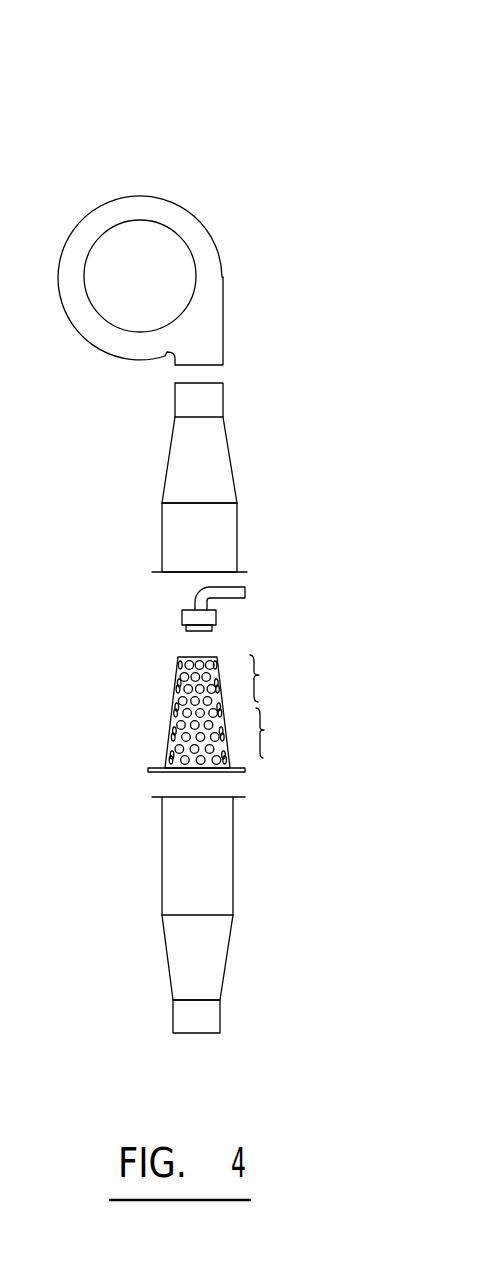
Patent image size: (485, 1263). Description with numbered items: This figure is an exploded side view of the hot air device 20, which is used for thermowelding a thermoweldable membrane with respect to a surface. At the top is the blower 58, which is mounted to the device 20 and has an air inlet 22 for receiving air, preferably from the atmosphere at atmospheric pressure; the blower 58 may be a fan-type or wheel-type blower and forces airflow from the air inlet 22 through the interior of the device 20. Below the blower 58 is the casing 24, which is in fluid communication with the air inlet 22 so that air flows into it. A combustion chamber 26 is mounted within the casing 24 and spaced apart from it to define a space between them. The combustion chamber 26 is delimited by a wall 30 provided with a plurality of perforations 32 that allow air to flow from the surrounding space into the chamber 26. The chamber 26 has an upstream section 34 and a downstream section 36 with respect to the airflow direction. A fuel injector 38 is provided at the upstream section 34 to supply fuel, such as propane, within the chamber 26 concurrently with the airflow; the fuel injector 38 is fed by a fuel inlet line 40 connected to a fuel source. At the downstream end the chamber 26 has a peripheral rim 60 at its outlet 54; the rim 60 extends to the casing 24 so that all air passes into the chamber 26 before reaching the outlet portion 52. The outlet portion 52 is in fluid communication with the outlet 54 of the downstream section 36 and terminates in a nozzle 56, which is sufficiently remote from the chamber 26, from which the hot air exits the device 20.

The hot air device 20 is at (232, 135).
The blower 58 is at (110, 212).
The air inlet 22 is at (98, 313).
The casing 24 is at (218, 465).
The fuel inlet line 40 is at (240, 587).
The fuel injector 38 is at (205, 631).
The combustion chamber 26 is at (174, 647).
The wall 30 is at (176, 672).
The perforations 32 is at (172, 731).
The upstream section 34 is at (259, 675).
The downstream section 36 is at (264, 730).
The peripheral rim 60 is at (150, 768).
The outlet 54 is at (212, 780).
The outlet portion 52 is at (176, 843).
The nozzle 56 is at (212, 1018).